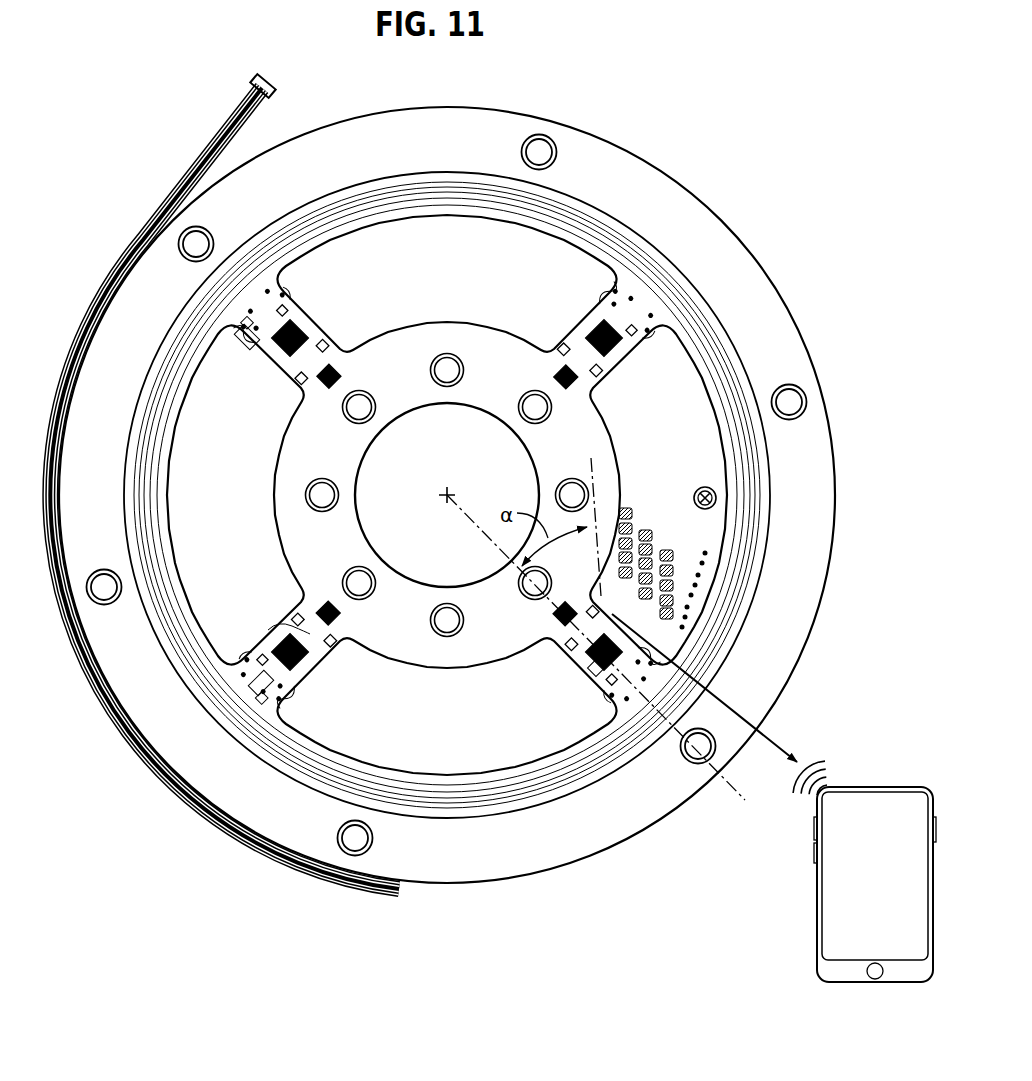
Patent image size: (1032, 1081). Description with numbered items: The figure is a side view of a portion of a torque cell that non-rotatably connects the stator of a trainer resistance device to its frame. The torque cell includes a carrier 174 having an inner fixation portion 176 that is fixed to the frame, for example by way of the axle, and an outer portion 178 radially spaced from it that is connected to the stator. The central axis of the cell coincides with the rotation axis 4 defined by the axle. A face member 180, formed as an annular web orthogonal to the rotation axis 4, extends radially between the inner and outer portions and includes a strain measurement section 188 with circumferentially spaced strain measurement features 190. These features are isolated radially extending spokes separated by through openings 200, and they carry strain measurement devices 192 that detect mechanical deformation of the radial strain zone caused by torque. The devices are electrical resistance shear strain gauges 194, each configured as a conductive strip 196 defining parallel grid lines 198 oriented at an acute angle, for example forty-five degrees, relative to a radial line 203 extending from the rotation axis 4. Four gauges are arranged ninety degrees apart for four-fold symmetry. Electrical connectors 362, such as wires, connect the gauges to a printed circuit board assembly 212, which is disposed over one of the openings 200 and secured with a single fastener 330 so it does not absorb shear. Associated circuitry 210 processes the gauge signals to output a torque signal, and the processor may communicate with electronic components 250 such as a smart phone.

The rotation axis 4 is at (440, 497).
The carrier 174 is at (237, 327).
The inner fixation portion 176 is at (487, 404).
The outer portion 178 is at (625, 162).
The face member 180 is at (290, 643).
The strain measurement section 188 is at (250, 338).
The strain measurement features 190 is at (254, 510).
The strain measurement devices 192 is at (300, 327).
The shear strain gauges 194 is at (620, 608).
The conductive strip 196 is at (633, 638).
The grid lines 198 is at (596, 669).
The openings 200 is at (449, 240).
The radial line 203 is at (747, 800).
The circuitry 210 is at (814, 657).
The printed circuit board assembly 212 is at (680, 373).
The electronic components 250 is at (817, 936).
The fastener 330 is at (716, 498).
The electrical connectors 362 is at (555, 788).